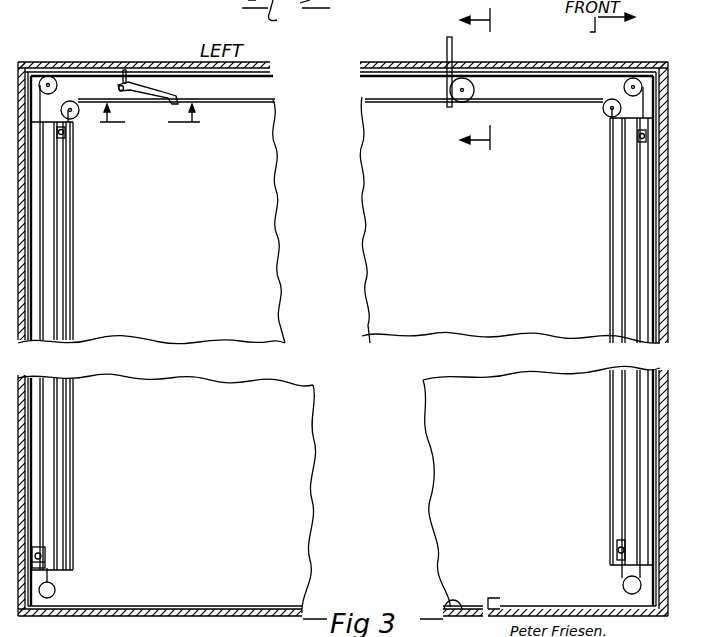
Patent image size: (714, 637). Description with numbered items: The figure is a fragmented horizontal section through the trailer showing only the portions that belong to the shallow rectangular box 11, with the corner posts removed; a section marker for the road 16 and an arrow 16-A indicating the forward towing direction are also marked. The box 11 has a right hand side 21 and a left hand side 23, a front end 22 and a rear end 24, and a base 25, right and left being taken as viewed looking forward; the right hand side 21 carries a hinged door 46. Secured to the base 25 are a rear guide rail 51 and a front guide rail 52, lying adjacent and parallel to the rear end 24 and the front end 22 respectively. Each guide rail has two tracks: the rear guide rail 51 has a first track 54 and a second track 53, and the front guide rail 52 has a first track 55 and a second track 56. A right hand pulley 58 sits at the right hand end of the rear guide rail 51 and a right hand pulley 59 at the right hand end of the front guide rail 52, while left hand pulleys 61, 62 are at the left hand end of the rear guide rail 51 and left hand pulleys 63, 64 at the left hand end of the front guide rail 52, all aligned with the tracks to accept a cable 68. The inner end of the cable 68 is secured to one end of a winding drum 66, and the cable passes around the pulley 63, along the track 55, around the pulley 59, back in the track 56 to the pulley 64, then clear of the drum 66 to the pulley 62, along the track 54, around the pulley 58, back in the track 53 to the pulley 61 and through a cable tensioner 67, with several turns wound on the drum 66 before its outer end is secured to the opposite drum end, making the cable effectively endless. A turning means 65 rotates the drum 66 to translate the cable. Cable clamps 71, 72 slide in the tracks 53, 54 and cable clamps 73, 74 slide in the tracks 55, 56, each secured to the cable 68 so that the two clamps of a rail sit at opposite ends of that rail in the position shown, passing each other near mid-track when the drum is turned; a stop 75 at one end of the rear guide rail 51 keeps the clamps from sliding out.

The box 11 is at (151, 125).
The road 16 is at (491, 82).
The arrow 16-A is at (585, 27).
The right hand side 21 is at (231, 609).
The front end 22 is at (660, 358).
The left hand side 23 is at (407, 62).
The rear end 24 is at (58, 376).
The base 25 is at (140, 388).
The hinged door 46 is at (450, 593).
The rear guide rail 51 is at (76, 518).
The front guide rail 52 is at (610, 477).
The second track 53 is at (62, 497).
The first track 54 is at (40, 460).
The first track 55 is at (617, 435).
The second track 56 is at (640, 407).
The right hand pulley 58 is at (55, 590).
The right hand pulley 59 is at (624, 585).
The left hand pulley 61 is at (72, 90).
The left hand pulley 62 is at (52, 74).
The left hand pulley 63 is at (611, 100).
The left hand pulley 64 is at (632, 68).
The turning means 65 is at (448, 42).
The winding drum 66 is at (457, 106).
The cable tensioner 67 is at (168, 90).
The cable 68 is at (276, 75).
The cable clamp 71 is at (66, 136).
The cable clamp 72 is at (43, 555).
The cable clamp 73 is at (617, 548).
The cable clamp 74 is at (637, 137).
The stop 75 is at (50, 575).